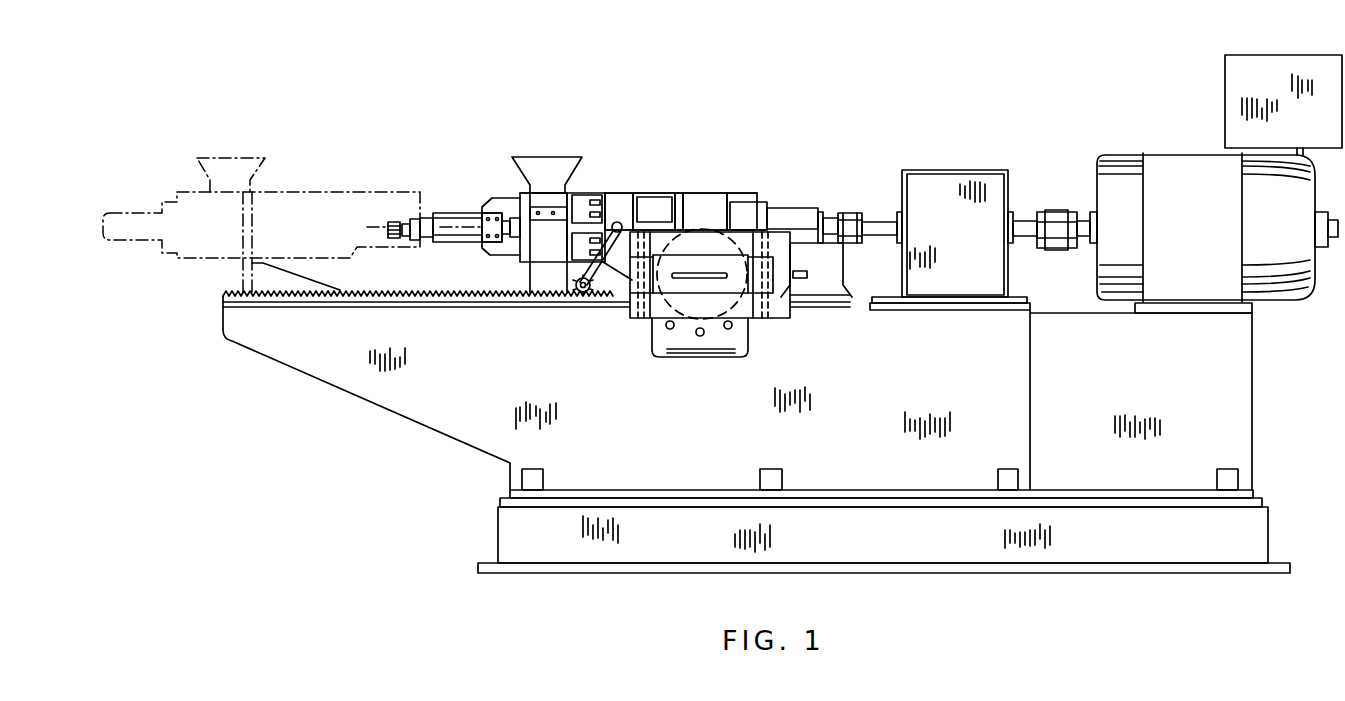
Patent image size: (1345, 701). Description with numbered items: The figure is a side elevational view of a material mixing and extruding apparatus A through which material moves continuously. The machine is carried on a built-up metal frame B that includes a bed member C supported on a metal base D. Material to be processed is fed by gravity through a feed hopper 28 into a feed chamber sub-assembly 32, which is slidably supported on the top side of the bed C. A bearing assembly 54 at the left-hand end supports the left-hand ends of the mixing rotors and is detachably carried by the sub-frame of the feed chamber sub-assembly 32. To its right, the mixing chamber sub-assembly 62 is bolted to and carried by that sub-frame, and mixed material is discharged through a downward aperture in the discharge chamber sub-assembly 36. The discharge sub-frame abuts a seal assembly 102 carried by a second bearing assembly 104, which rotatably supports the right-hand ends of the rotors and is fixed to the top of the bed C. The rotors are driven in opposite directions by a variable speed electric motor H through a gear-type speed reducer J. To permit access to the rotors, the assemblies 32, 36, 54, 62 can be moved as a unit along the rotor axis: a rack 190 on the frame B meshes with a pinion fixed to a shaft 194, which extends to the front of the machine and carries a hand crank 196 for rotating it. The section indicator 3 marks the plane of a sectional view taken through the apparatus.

The feed hopper 28 is at (533, 154).
The bearing assembly 54 is at (480, 208).
The feed chamber sub-assembly 32 is at (518, 271).
The mixing chamber sub-assembly 62 is at (605, 197).
The discharge chamber sub-assembly 36 is at (688, 196).
The seal assembly 102 is at (737, 196).
The bearing assembly 104 is at (797, 210).
The rack 190 is at (443, 289).
The shaft 194 is at (578, 292).
The hand crank 196 is at (590, 290).
The section line 3- 3 is at (365, 218).
The material mixing and extruding apparatus A is at (728, 148).
The built-up metal frame B is at (437, 444).
The bed member C is at (666, 403).
The metal base D is at (490, 540).
The variable speed electric motor H is at (1175, 151).
The gear-type speed reducer J is at (971, 167).